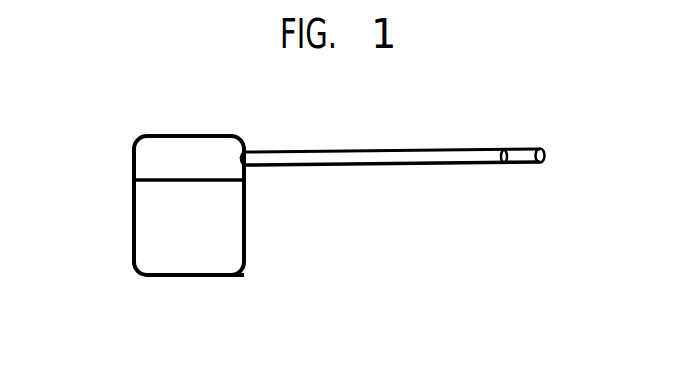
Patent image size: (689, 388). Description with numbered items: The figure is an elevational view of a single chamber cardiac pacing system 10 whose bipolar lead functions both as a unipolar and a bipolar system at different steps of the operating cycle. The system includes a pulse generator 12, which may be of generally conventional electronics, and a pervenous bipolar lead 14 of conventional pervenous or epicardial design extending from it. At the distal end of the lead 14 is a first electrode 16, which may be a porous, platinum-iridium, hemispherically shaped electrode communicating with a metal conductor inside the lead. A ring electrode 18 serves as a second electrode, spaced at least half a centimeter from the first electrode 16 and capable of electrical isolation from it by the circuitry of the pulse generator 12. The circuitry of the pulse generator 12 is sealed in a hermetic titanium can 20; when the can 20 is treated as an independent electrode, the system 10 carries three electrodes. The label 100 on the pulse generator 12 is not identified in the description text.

The toothbrush assembly 10 is at (183, 114).
The container body 12 is at (112, 201).
The handle 14 is at (354, 142).
The handle end cap 16 is at (546, 151).
The ring 18 is at (503, 165).
The container lower portion 20 is at (232, 252).
The container upper portion 100 is at (148, 147).